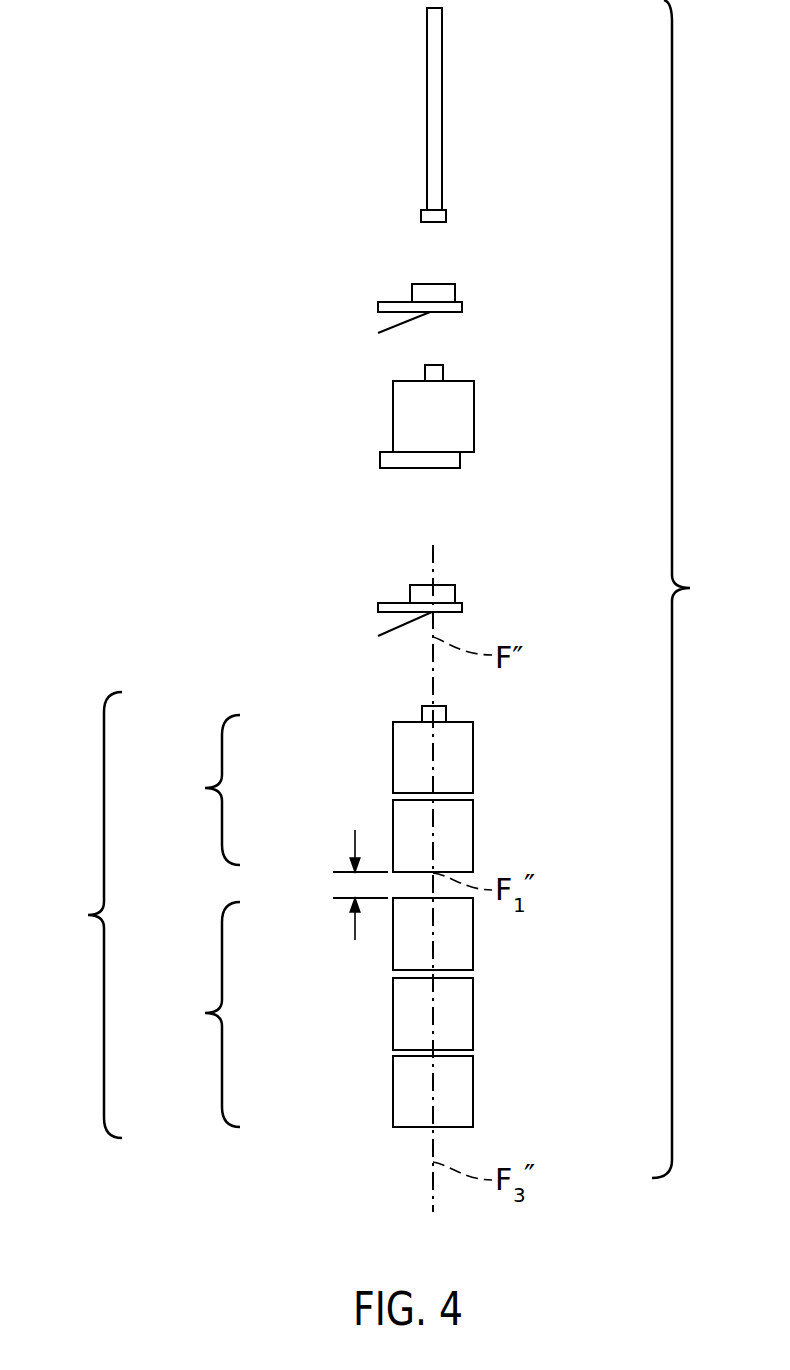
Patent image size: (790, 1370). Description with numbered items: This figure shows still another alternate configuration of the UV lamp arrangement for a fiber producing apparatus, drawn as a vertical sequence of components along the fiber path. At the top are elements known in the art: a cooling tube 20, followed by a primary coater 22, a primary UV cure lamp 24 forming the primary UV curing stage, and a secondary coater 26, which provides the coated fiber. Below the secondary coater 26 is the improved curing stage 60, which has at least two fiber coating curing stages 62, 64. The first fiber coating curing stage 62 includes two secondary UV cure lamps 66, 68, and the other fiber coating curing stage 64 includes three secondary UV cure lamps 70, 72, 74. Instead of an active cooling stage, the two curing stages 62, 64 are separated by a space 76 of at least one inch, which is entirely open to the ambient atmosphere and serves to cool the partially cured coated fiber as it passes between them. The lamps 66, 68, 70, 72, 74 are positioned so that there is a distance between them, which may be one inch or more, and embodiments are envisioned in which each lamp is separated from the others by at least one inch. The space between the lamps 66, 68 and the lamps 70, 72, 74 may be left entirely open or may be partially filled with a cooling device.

The cooling tube 20 is at (442, 130).
The primary coater 22 is at (455, 290).
The primary UV cure lamp 24 is at (474, 413).
The secondary coater 26 is at (455, 595).
The improved curing stage 60 is at (91, 915).
The fiber coating curing stage 62 is at (207, 790).
The fiber coating curing stage 64 is at (207, 1014).
The secondary UV cure lamp 66 is at (473, 765).
The secondary UV cure lamp 68 is at (473, 845).
The secondary UV cure lamp 70 is at (473, 925).
The secondary UV cure lamp 72 is at (473, 1002).
The secondary UV cure lamp 74 is at (473, 1077).
The one inch space 76 is at (352, 840).